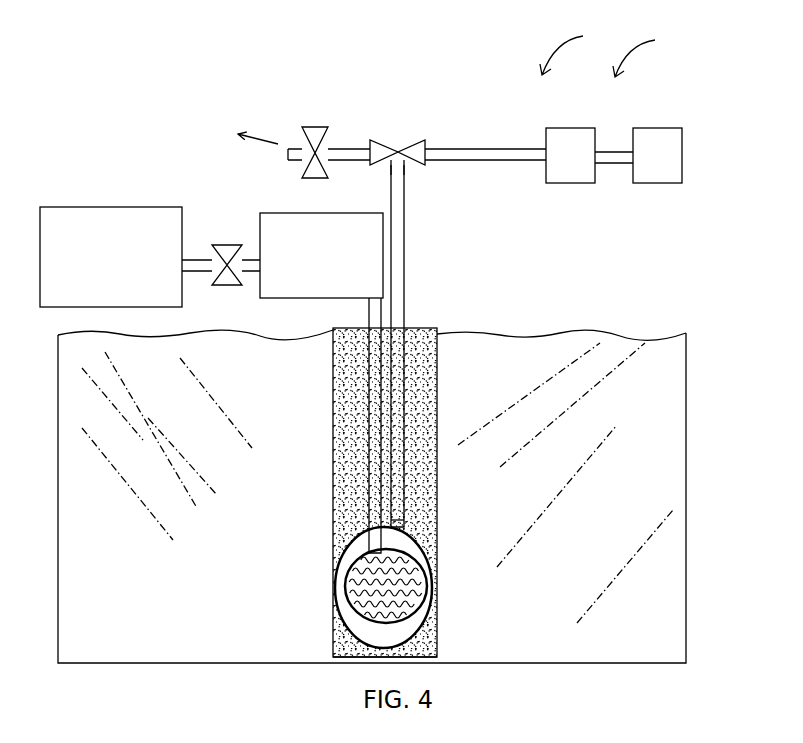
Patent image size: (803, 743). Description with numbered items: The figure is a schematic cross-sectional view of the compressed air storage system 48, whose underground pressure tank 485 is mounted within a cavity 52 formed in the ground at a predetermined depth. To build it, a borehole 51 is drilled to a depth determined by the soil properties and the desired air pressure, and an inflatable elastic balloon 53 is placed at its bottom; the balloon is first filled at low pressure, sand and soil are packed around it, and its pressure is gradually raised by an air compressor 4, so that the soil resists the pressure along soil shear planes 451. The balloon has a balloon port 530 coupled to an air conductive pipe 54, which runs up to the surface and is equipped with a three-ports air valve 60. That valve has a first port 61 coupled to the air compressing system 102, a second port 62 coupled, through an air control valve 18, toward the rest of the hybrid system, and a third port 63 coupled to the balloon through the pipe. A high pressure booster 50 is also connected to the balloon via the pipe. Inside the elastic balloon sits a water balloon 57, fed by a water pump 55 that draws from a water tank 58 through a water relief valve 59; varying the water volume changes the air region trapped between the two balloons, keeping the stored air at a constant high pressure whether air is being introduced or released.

The air compressor 4 is at (660, 185).
The air control valve 18 is at (307, 128).
The compressed air storage system 48 is at (581, 45).
The high pressure booster 50 is at (570, 185).
The borehole 51 is at (352, 378).
The cavity 52 is at (435, 632).
The inflatable elastic balloon 53 is at (428, 547).
The air conductive pipe 54 is at (405, 225).
The water pump 55 is at (288, 213).
The water balloon 57 is at (358, 593).
The water tank 58 is at (113, 208).
The water relief valve 59 is at (232, 245).
The three-ports air valve 60 is at (398, 140).
The first port 61 is at (417, 142).
The second port 62 is at (370, 145).
The third port 63 is at (403, 160).
The air compressing system 102 is at (659, 48).
The soil shear planes 451 is at (220, 408).
The underground pressure tank 485 is at (463, 577).
The balloon port 530 is at (407, 527).